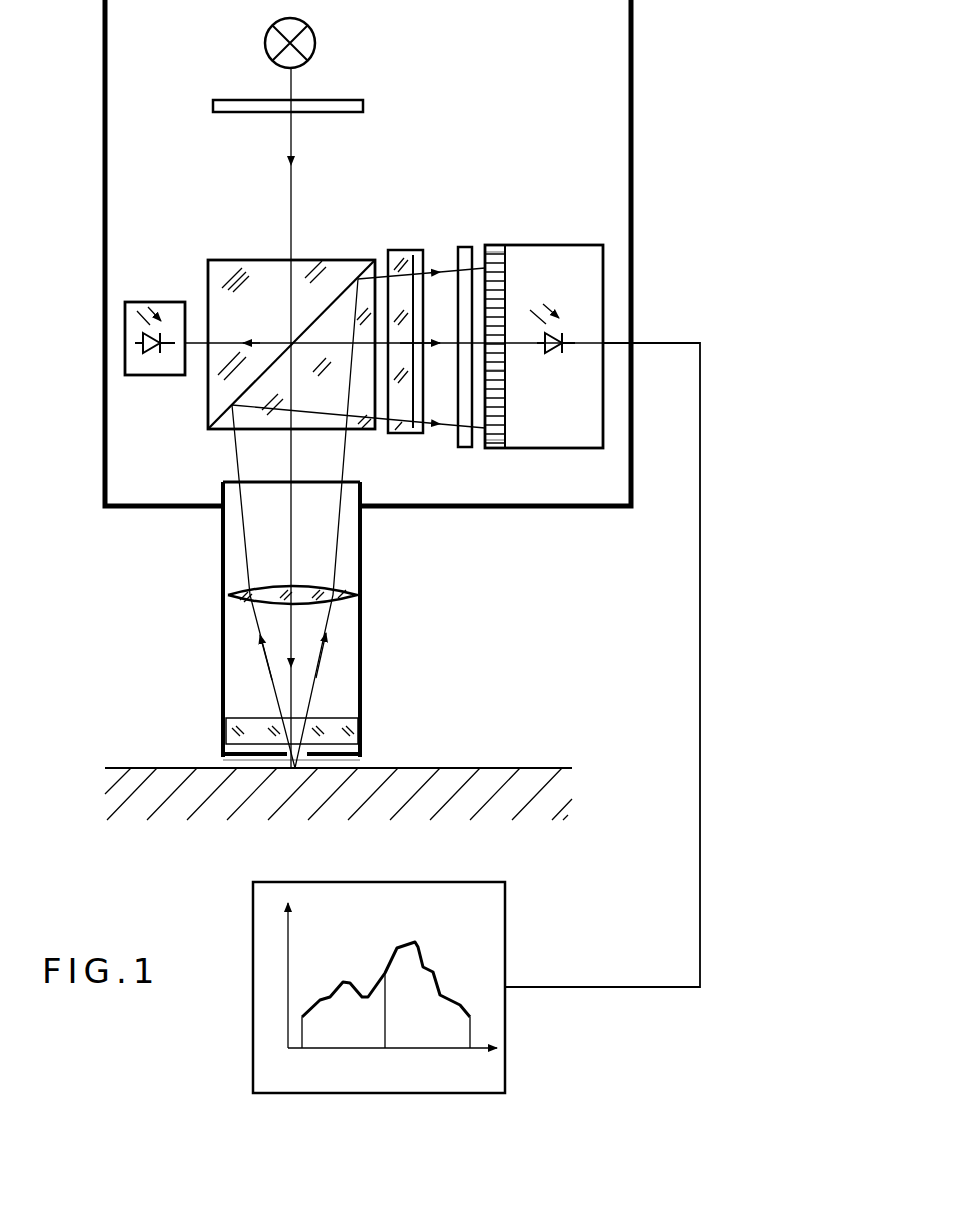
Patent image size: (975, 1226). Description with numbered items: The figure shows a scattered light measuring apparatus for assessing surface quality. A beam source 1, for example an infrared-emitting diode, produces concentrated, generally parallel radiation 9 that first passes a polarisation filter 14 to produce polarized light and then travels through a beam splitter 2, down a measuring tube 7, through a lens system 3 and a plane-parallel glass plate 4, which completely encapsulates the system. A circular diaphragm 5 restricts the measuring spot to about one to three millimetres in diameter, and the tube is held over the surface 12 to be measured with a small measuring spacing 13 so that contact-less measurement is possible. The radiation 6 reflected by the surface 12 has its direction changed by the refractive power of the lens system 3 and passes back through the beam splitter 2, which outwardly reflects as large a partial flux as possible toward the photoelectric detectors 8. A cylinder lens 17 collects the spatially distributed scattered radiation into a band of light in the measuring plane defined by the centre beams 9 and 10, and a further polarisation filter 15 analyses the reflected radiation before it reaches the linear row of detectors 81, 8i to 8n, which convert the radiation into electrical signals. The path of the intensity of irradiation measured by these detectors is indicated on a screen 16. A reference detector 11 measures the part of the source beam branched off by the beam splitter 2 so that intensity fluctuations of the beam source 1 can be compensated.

The beam source 1 is at (315, 40).
The beam splitter 2 is at (238, 258).
The lens system 3 is at (342, 600).
The plane-parallel glass plate 4 is at (335, 725).
The circular diaphragm 5 is at (355, 758).
The reflected radiation 6 is at (265, 658).
The measuring tube 7 is at (362, 545).
The photoelectric detectors 8 is at (570, 244).
The detector n 8n is at (505, 252).
The detector i 8i is at (505, 370).
The detector 1 81 is at (505, 440).
The radiation 9 is at (291, 195).
The centre beam 10 is at (316, 338).
The photoelectric detector 11 is at (150, 300).
The surface 12 is at (430, 768).
The measuring spacing 13 is at (225, 760).
The polarisation filter 14 is at (232, 94).
The polarisation filter 15 is at (460, 246).
The screen 16 is at (253, 918).
The cylinder lens 17 is at (395, 248).